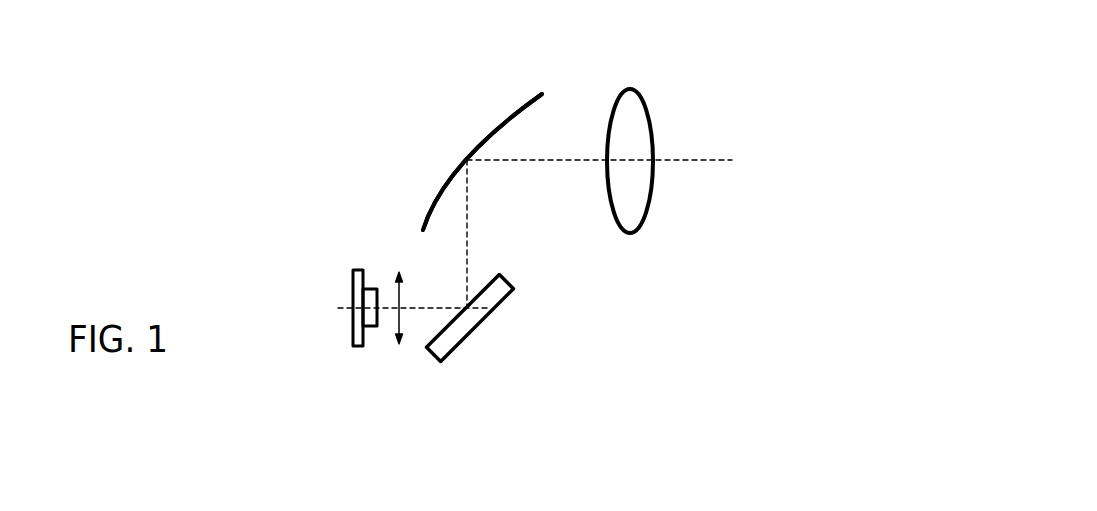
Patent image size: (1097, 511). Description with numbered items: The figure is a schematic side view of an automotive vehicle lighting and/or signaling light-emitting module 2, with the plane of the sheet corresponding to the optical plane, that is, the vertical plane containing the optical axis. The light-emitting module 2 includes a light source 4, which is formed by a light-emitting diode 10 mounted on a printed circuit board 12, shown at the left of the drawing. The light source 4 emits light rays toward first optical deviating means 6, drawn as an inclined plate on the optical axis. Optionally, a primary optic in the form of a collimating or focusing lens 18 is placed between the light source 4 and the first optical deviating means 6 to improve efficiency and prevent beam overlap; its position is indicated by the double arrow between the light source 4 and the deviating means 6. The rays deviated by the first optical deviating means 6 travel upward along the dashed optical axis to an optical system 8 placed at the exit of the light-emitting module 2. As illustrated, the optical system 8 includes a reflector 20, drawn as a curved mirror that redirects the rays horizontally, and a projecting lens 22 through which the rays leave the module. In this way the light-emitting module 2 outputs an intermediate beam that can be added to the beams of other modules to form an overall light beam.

The light-emitting module 2 is at (617, 330).
The light source 4 is at (320, 337).
The first optical deviating means 6 is at (490, 339).
The optical system 8 is at (581, 124).
The light-emitting diode 10 is at (375, 287).
The printed circuit board 12 is at (353, 280).
The collimating or focusing lens 18 is at (408, 327).
The reflector 20 is at (452, 177).
The projecting lens 22 is at (635, 148).